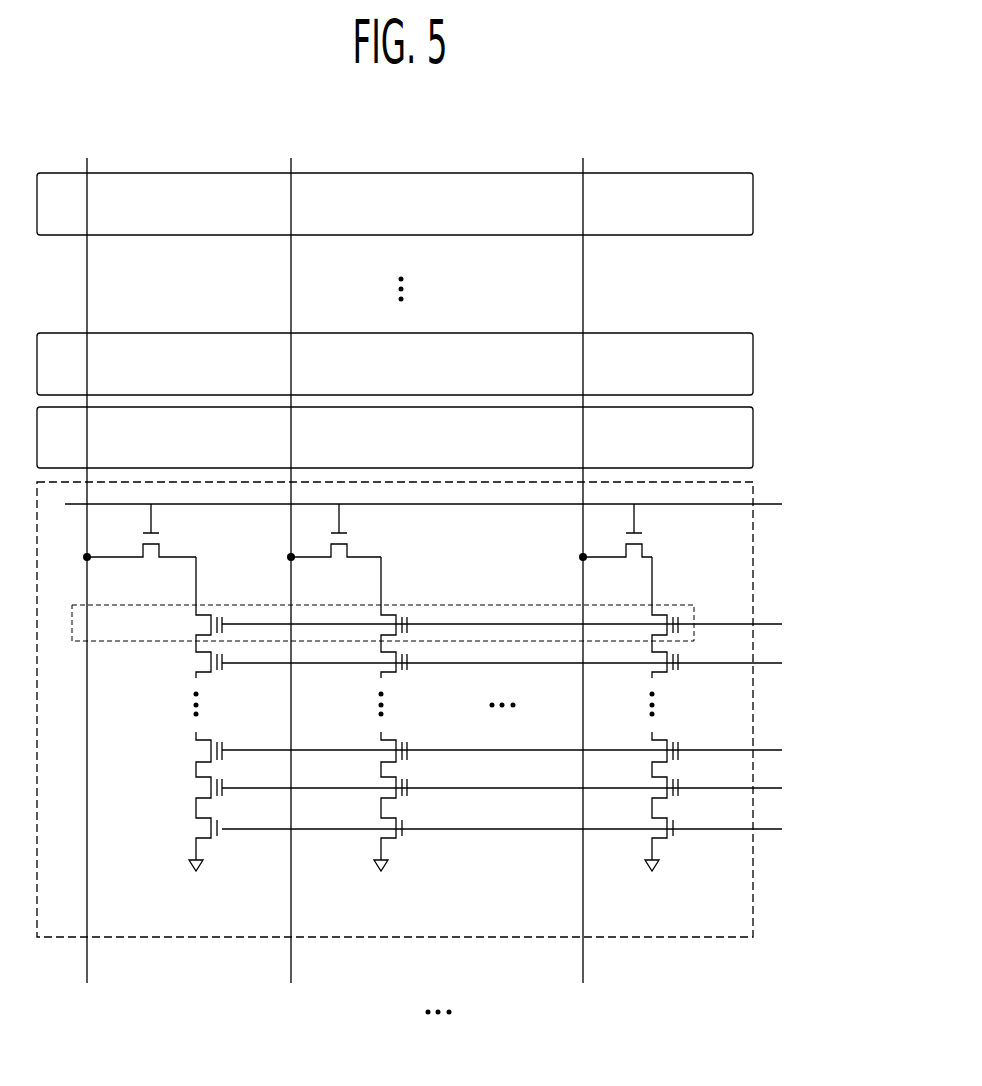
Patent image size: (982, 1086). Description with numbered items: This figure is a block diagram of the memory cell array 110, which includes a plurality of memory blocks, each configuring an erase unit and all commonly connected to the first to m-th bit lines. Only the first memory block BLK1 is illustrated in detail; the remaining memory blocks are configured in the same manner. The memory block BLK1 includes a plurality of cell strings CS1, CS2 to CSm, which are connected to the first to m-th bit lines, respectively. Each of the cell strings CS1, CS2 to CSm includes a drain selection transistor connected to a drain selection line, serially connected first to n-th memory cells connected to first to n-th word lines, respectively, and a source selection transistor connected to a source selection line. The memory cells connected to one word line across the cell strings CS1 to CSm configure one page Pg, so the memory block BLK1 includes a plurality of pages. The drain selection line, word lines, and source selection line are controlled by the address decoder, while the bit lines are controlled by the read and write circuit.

The memory cell array 110 is at (847, 158).
The memory block BLK1 is at (753, 903).
The page Pg is at (683, 606).
The first cell string CS1 is at (216, 870).
The second cell string CS2 is at (403, 860).
The m-th cell string CSm is at (675, 863).